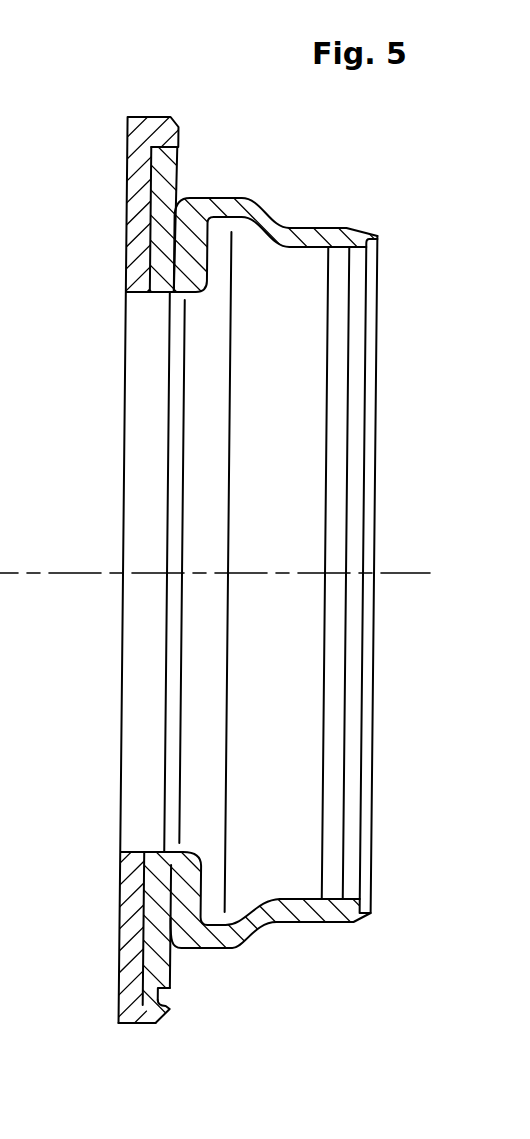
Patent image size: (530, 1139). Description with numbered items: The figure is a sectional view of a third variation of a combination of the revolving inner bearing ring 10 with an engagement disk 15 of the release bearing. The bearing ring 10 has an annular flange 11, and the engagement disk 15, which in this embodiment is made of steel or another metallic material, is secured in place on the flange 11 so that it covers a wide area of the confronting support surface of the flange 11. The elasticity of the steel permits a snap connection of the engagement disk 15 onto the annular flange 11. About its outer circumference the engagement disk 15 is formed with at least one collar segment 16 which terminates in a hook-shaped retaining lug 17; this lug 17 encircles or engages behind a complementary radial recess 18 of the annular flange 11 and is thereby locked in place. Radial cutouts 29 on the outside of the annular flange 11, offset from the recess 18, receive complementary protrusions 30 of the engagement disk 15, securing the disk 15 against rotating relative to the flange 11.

The inner bearing ring 10 is at (321, 946).
The annular flange 11 is at (176, 188).
The engagement disk 15 is at (124, 225).
The collar segment 16 is at (157, 1025).
The retaining lug 17 is at (174, 1004).
The radial recess 18 is at (176, 988).
The radial cutouts 29 is at (174, 146).
The protrusions 30 is at (152, 118).